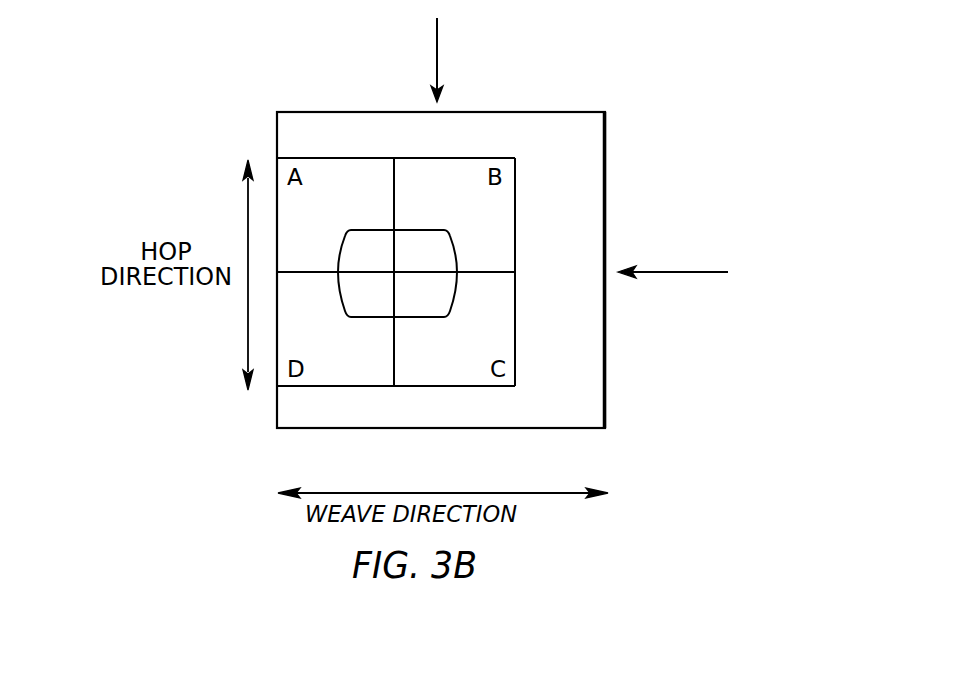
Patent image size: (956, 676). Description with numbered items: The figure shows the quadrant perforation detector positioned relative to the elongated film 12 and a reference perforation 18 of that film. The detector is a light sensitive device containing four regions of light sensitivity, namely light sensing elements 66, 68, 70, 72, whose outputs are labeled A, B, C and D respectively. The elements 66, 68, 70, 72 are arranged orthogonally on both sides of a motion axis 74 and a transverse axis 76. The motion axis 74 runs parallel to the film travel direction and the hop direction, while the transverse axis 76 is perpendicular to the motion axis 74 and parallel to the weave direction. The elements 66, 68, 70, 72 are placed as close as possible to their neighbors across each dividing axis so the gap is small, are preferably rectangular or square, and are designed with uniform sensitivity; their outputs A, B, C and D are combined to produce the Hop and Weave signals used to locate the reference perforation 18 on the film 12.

The elongated film 12 is at (558, 112).
The reference perforation 18 is at (455, 253).
The light sensing element 66 is at (345, 158).
The light sensing element 68 is at (430, 158).
The light sensing element 70 is at (427, 386).
The light sensing element 72 is at (364, 386).
The motion axis 74 is at (437, 53).
The transverse axis 76 is at (667, 272).